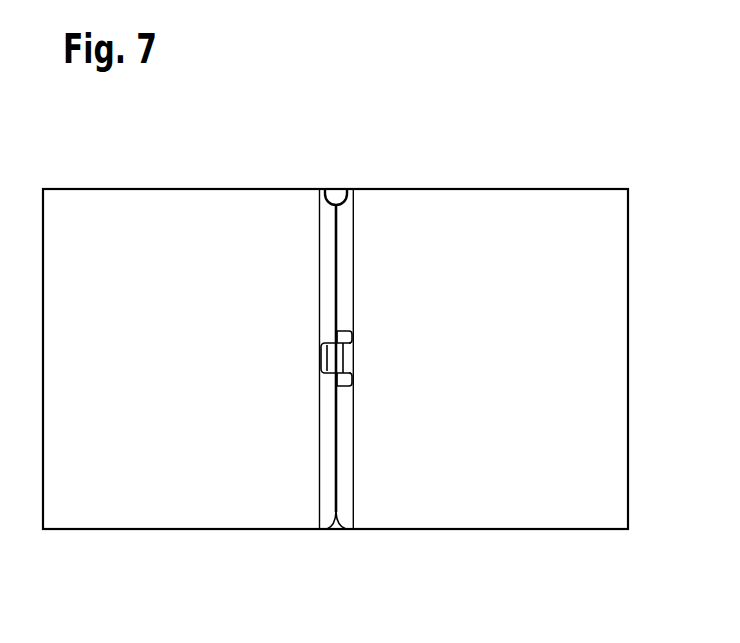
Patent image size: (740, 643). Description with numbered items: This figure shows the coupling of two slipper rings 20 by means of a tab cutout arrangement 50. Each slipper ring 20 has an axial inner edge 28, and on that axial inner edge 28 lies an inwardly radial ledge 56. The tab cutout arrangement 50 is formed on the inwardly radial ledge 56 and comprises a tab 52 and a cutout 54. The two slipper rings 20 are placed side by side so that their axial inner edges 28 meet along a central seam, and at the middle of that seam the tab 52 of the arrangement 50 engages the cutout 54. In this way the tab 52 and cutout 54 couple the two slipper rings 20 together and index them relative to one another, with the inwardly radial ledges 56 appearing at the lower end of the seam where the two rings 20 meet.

The slipper ring 20 is at (199, 374).
The axial inner edge 28 is at (310, 163).
The tab cutout arrangement 50 is at (304, 351).
The tab 52 is at (335, 355).
The cutout 54 is at (319, 361).
The inwardly radial ledge 56 is at (325, 530).